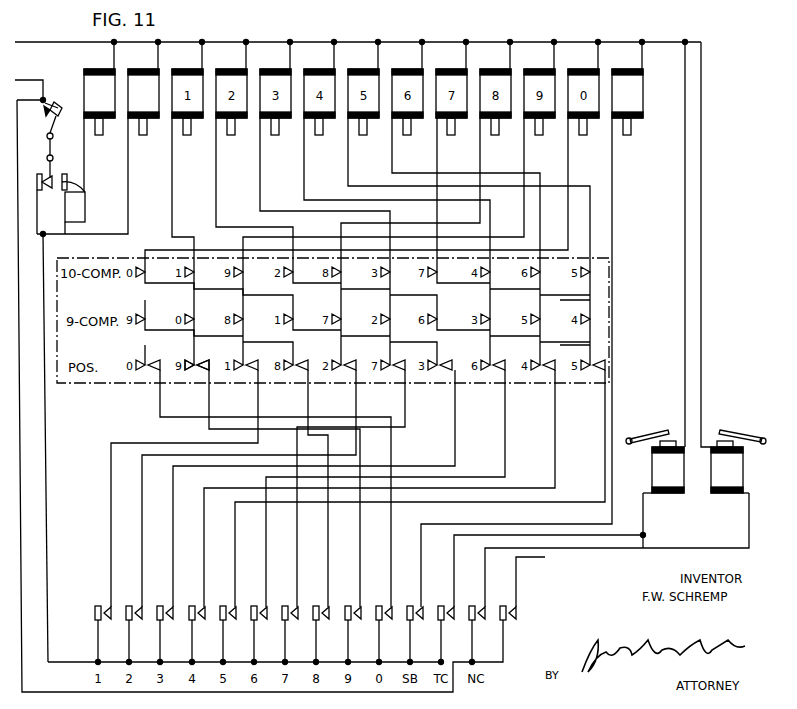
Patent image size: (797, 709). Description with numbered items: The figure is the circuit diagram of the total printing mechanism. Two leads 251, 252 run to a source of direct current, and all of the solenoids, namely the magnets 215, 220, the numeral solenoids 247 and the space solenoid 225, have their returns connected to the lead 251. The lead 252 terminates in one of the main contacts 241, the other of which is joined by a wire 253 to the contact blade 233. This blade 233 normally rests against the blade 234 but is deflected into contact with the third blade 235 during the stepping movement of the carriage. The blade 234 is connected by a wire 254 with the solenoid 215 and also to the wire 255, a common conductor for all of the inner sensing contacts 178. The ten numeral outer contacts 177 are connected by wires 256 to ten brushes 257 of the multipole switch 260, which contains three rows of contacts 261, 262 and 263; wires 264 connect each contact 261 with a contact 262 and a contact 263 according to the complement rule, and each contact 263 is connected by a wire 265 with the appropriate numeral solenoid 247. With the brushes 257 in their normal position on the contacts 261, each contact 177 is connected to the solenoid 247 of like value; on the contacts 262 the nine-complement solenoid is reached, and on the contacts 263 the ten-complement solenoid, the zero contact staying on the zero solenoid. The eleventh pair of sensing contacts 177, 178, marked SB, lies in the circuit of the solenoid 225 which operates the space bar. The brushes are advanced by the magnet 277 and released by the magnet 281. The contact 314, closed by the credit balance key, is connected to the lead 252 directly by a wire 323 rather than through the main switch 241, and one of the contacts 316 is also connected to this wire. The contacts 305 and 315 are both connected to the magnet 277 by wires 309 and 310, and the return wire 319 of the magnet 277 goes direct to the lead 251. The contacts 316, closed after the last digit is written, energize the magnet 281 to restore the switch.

The lead 251 is at (73, 42).
The lead 252 is at (46, 80).
The magnet 220 is at (106, 69).
The magnet 215 is at (152, 69).
The numeral solenoids 247 is at (218, 69).
The solenoid 225 is at (640, 80).
The main contacts 241 is at (60, 102).
The wire 253 is at (63, 128).
The contact blade 233 is at (63, 152).
The contact blade 234 is at (50, 197).
The contact blade 235 is at (85, 196).
The wire 254 is at (131, 180).
The wires 265 is at (217, 160).
The return wire 319 is at (685, 218).
The contacts 263 is at (175, 276).
The contacts 262 is at (192, 318).
The wires 264 is at (222, 300).
The contacts 261 is at (143, 360).
The multipole switch 260 is at (110, 390).
The brushes 257 is at (205, 380).
The wire 255 is at (46, 428).
The wire 323 is at (22, 535).
The wires 256 is at (111, 520).
The outer contact blade 177 is at (118, 608).
The inner contact blade 178 is at (118, 630).
The contact 314 is at (486, 606).
The contact 305 is at (445, 622).
The companion contact 315 is at (476, 622).
The contacts 316 is at (508, 622).
The wire 309 is at (530, 560).
The wire 310 is at (578, 552).
The magnet 277 is at (652, 460).
The magnet 281 is at (736, 460).